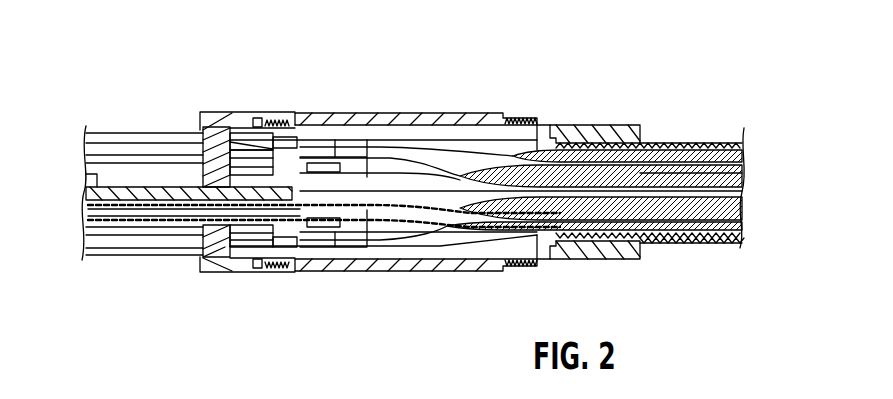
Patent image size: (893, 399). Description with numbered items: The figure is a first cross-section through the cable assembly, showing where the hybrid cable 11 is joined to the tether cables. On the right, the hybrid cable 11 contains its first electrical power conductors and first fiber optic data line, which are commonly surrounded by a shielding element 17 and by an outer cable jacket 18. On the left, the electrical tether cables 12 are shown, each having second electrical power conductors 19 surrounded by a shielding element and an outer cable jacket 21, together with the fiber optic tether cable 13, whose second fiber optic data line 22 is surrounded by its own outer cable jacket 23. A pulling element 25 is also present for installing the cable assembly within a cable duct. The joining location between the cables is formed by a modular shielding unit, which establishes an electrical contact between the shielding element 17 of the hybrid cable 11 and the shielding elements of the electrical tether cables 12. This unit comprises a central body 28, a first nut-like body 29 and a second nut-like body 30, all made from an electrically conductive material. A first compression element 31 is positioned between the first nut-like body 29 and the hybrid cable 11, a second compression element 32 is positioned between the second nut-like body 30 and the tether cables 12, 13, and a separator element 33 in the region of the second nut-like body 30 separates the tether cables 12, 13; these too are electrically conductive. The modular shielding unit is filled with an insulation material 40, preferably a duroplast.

The hybrid cable 11 is at (703, 121).
The electrical tether cable 12 is at (119, 122).
The fiber optic tether cable 13 is at (116, 235).
The shielding element 17 is at (735, 235).
The outer cable jacket 18 is at (677, 259).
The second electrical power conductors 19 is at (77, 157).
The outer cable jacket 21 is at (163, 203).
The second fiber optic data line 22 is at (77, 211).
The outer cable jacket 23 is at (78, 186).
The pulling element 25 is at (203, 128).
The central body 28 is at (457, 270).
The first nut-like body 29 is at (608, 258).
The second nut-like body 30 is at (238, 269).
The first compression element 31 is at (567, 128).
The second compression element 32 is at (265, 127).
The separator element 33 is at (295, 128).
The insulation material 40 is at (520, 113).